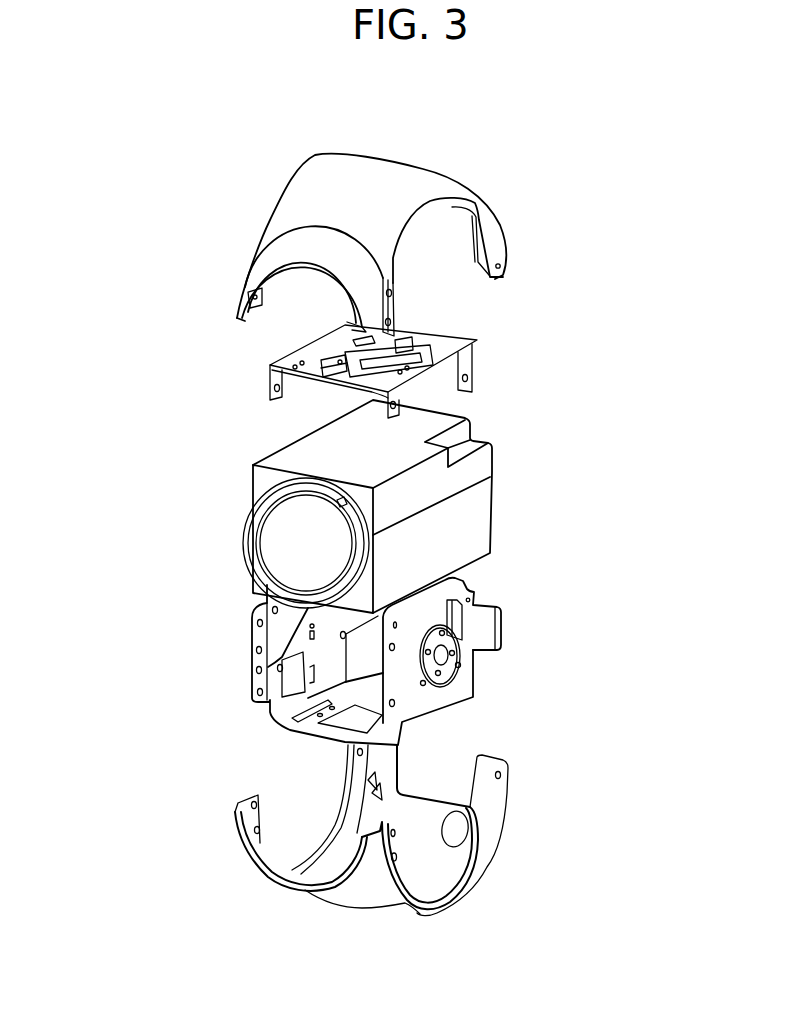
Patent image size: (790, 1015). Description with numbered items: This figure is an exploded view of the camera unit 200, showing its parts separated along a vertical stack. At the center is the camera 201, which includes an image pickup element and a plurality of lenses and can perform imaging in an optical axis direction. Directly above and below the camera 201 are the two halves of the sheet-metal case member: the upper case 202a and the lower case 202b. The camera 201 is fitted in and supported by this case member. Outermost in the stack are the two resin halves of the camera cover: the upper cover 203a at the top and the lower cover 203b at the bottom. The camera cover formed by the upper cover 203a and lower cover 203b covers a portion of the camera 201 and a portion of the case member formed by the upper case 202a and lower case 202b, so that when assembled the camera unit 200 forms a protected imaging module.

The camera unit 200 is at (193, 247).
The upper cover 203a is at (413, 187).
The upper case 202a is at (440, 340).
The camera 201 is at (467, 528).
The lower case 202b is at (453, 688).
The lower cover 203b is at (440, 872).